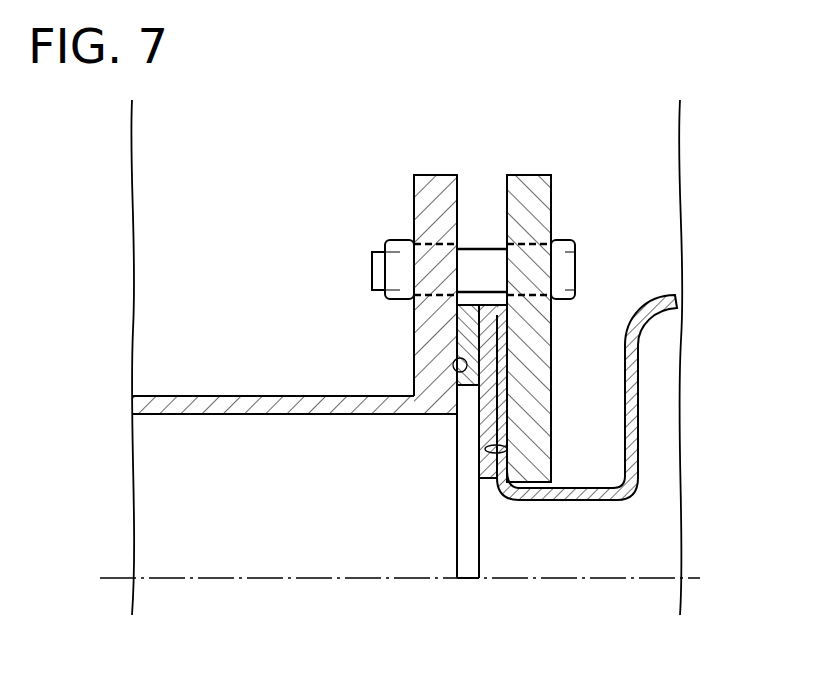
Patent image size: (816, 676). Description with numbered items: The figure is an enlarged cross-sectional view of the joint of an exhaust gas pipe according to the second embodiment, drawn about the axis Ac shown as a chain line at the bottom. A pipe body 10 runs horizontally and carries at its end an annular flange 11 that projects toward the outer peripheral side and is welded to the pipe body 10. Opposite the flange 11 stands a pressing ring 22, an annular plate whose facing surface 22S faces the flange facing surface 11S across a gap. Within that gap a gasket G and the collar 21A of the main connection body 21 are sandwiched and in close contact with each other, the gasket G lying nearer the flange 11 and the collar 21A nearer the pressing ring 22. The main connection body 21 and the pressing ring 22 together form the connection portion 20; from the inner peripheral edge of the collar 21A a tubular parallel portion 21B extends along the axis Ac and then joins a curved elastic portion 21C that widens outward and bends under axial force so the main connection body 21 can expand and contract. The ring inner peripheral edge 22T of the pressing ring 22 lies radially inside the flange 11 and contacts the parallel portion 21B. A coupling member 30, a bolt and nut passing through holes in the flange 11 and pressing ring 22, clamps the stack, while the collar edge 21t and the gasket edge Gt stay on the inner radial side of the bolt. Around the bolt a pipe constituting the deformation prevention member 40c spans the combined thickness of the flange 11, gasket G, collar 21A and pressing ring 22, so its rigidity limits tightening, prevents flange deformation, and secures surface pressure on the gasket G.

The pipe body 10 is at (199, 406).
The flange 11 is at (423, 198).
The flange facing surface 11S is at (462, 368).
The connection portion 20 is at (650, 389).
The main connection body 21 is at (563, 454).
The collar 21A is at (482, 422).
The parallel portion 21B is at (550, 489).
The elastic portion 21C is at (639, 460).
The collar edge 21t is at (497, 307).
The pressing ring 22 is at (540, 199).
The facing surface 22S is at (488, 449).
The ring inner peripheral edge 22T is at (528, 480).
The coupling member 30 is at (557, 203).
The deformation prevention member 40c is at (475, 247).
The gasket G is at (467, 523).
The gasket edge Gt is at (472, 303).
The axis Ac is at (176, 578).